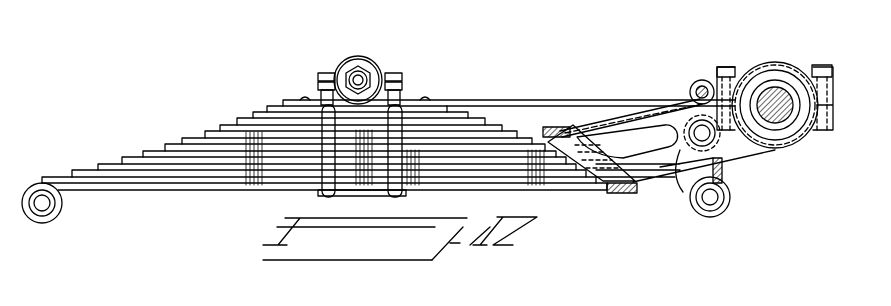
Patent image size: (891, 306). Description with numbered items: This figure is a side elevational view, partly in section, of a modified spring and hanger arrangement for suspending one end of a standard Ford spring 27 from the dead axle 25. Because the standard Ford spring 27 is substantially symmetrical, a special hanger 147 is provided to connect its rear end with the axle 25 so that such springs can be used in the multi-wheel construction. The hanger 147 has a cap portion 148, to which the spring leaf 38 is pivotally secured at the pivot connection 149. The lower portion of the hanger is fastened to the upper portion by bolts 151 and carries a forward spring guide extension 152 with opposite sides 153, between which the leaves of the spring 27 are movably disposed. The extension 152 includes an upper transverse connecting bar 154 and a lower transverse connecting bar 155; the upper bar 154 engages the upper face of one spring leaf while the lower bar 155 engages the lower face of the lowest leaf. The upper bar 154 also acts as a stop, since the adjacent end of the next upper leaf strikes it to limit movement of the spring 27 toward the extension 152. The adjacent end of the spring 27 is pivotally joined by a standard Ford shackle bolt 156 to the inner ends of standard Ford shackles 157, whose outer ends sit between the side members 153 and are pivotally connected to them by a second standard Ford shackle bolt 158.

The spring 27 is at (248, 130).
The spring leaf 38 is at (556, 95).
The axle 25 is at (777, 88).
The hanger 147 is at (647, 123).
The cap portion 148 is at (752, 72).
The pivot connection 149 is at (702, 88).
The bolts 151 is at (729, 59).
The forward spring guide extension 152 is at (598, 128).
The opposite sides 153 is at (660, 165).
The upper transverse connecting bar 154 is at (546, 130).
The lower transverse connecting bar 155 is at (613, 193).
The shackle bolt 156 is at (710, 207).
The shackles 157 is at (721, 168).
The second shackle bolt 158 is at (686, 136).